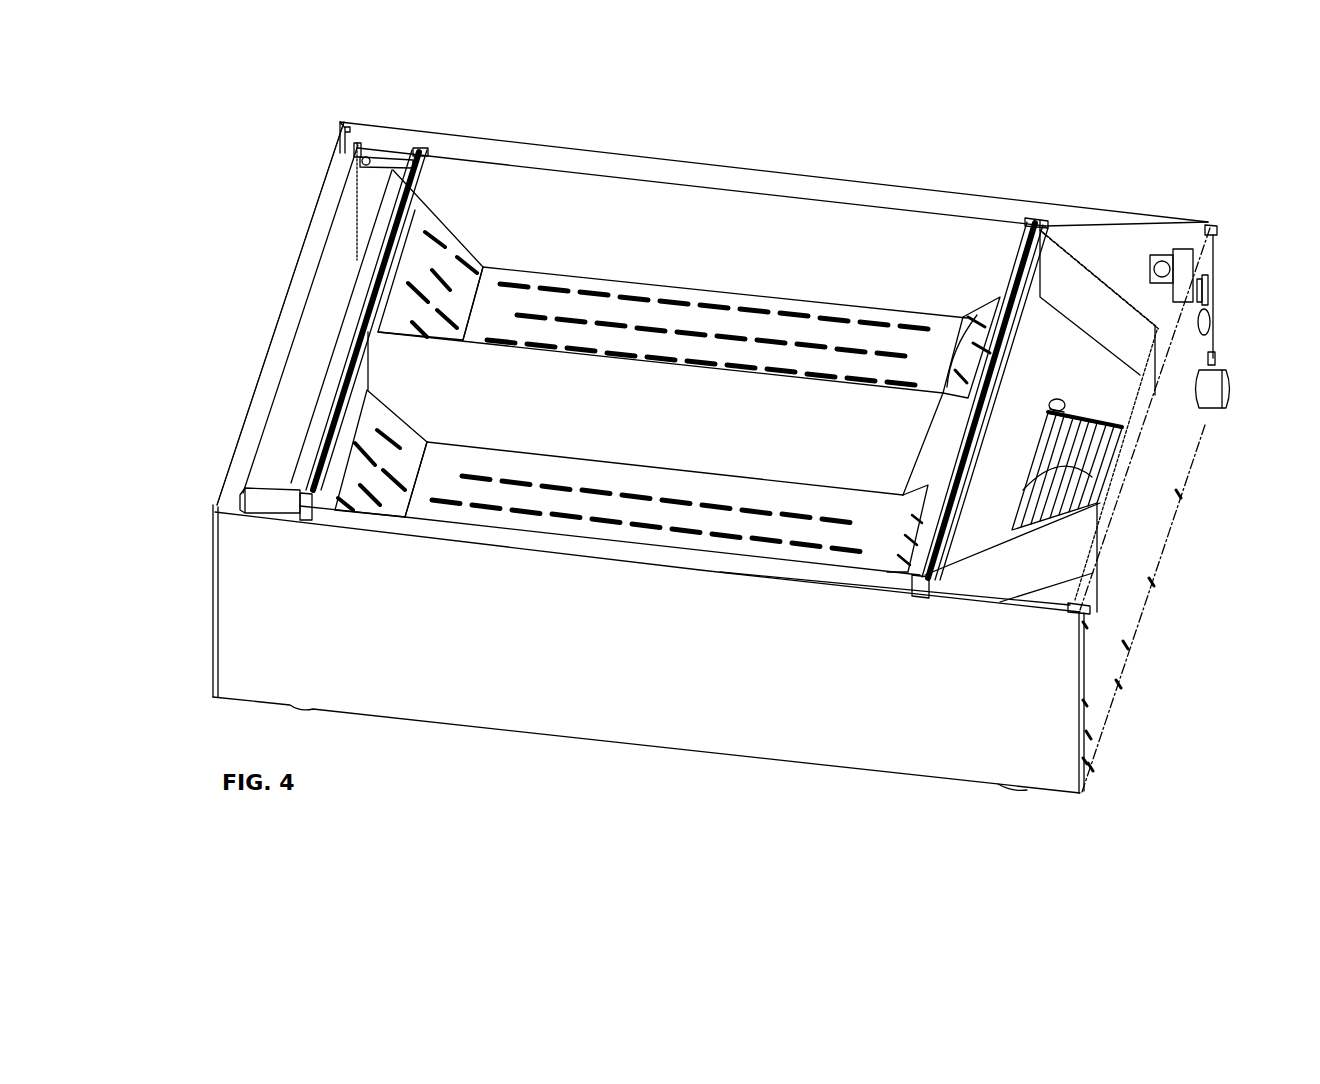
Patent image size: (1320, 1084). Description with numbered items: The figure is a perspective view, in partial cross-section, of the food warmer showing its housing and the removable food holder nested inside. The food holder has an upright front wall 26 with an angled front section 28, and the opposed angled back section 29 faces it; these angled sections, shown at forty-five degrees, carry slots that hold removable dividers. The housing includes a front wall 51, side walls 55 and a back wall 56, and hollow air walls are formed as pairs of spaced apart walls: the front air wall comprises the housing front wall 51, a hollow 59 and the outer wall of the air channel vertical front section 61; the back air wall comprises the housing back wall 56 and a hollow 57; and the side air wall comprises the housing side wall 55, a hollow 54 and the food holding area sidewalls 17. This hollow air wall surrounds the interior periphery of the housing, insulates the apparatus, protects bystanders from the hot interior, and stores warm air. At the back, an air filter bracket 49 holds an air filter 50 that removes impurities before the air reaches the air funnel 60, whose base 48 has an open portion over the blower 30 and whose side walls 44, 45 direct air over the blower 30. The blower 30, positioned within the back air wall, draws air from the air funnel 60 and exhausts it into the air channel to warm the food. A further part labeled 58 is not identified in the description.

The food holding area sidewalls 17 is at (846, 244).
The food holder front wall 26 is at (420, 205).
The angled front section 28 is at (457, 271).
The angled back section 29 is at (667, 434).
The blower 30 is at (1078, 472).
The air funnel side wall 44 is at (1093, 314).
The air funnel side wall 45 is at (980, 537).
The air funnel base 48 is at (1014, 446).
The air filter bracket 49 is at (1046, 215).
The air filter 50 is at (1039, 267).
The housing front wall 51 is at (281, 296).
The side air wall hollow 54 is at (644, 167).
The housing side wall 55 is at (809, 176).
The housing back wall 56 is at (1124, 624).
The back air wall hollow 57 is at (1150, 394).
The rim 58 is at (1131, 238).
The front air wall hollow 59 is at (252, 435).
The air funnel 60 is at (1076, 297).
The outer wall of air channel vertical front section 61 is at (283, 423).